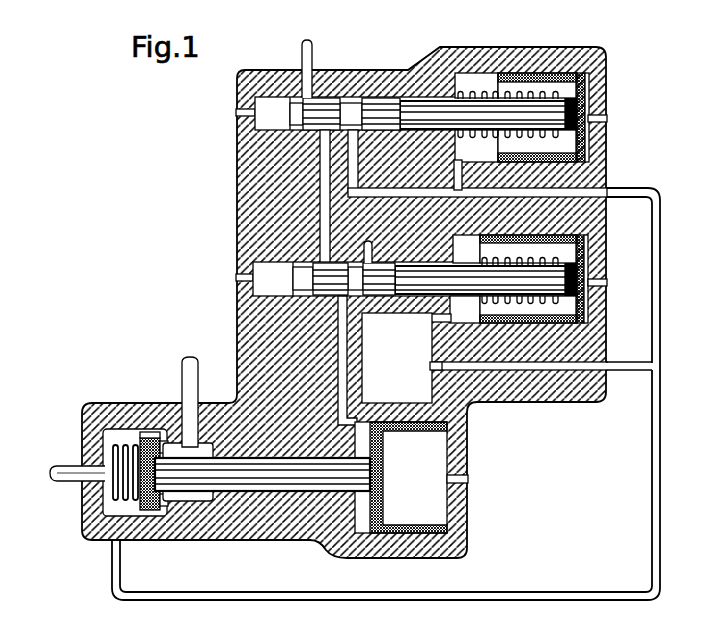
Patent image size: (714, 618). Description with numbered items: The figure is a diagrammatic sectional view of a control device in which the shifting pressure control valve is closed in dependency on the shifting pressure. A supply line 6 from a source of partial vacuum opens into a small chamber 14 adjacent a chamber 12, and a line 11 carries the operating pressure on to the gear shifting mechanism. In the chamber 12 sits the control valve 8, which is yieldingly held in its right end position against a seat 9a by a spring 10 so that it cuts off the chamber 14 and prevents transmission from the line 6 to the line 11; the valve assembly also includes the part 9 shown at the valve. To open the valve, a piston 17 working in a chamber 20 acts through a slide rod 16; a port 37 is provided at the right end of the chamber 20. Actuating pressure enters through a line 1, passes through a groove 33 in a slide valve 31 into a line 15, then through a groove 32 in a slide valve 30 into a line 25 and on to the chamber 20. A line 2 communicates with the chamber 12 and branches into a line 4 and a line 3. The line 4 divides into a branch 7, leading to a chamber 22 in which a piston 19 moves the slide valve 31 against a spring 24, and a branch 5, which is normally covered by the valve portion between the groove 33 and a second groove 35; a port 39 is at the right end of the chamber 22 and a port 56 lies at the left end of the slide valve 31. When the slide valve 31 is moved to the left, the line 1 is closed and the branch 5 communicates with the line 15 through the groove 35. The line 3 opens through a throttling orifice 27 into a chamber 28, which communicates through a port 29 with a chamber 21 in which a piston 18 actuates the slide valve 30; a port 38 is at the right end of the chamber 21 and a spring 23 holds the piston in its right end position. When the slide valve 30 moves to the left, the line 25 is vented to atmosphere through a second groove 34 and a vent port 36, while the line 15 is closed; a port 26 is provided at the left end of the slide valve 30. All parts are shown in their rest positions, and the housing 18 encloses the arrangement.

The line 1 is at (308, 54).
The line 2 is at (655, 458).
The line 3 is at (613, 366).
The line 4 is at (657, 292).
The branch line 5 is at (360, 192).
The supply line 6 is at (192, 372).
The branch line 7 is at (458, 175).
The control valve 8 is at (148, 437).
The disc 9 is at (160, 513).
The seat 9a is at (178, 428).
The spring 10 is at (113, 485).
The line 11 is at (63, 470).
The chamber 12 is at (117, 437).
The chamber 14 is at (205, 452).
The line 15 is at (321, 177).
The slide rod 16 is at (240, 474).
The piston 17 is at (417, 527).
The piston 18 is at (603, 232).
The piston 19 is at (542, 77).
The chamber 20 is at (363, 518).
The chamber 21 is at (460, 245).
The chamber 22 is at (465, 148).
The spring 23 is at (538, 258).
The spring 24 is at (468, 95).
The line 25 is at (347, 350).
The port 26 is at (246, 278).
The throttling orifice 27 is at (437, 363).
The chamber 28 is at (397, 358).
The port 29 is at (438, 318).
The slide valve 30 is at (427, 282).
The slide valve 31 is at (418, 110).
The groove 32 is at (330, 277).
The groove 33 is at (322, 113).
The second groove 34 is at (380, 277).
The second groove 35 is at (373, 115).
The vent port 36 is at (367, 272).
The port 37 is at (460, 478).
The port 38 is at (600, 283).
The port 39 is at (600, 118).
The port 56 is at (246, 112).